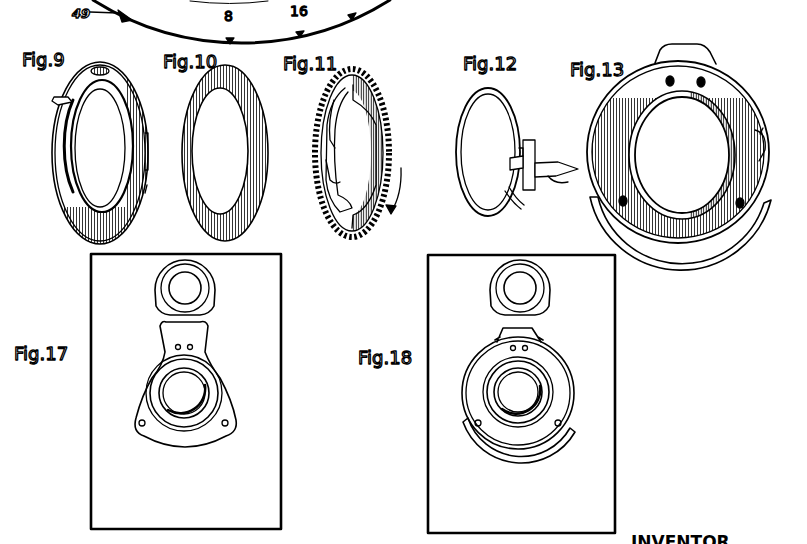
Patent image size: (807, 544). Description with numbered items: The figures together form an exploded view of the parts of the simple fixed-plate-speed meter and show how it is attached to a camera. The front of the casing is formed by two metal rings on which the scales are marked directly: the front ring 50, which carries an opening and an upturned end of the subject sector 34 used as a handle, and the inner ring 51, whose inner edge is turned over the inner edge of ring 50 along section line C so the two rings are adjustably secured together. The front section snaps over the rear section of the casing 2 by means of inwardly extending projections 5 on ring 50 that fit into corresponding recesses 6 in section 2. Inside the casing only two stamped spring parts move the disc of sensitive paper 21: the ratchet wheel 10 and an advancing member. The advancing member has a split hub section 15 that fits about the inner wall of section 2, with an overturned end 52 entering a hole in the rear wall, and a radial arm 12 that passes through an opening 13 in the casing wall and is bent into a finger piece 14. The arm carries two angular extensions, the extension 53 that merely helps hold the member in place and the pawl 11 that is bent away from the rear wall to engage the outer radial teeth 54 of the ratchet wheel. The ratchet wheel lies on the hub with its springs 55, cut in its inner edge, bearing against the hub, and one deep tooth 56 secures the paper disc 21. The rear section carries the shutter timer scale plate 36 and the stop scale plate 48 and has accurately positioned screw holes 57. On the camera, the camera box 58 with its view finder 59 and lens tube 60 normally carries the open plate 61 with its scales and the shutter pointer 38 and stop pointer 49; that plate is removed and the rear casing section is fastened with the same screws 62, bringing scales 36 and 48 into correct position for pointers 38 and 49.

In FIG. 13, the rear section of the casing 2 is at (729, 94).
In FIG. 18, the rear section of the casing 2 is at (572, 386).
In FIG. 9, the inwardly extending projections 5 is at (140, 100).
In FIG. 13, the recesses 6 is at (751, 108).
In FIG. 11, the ratchet wheel 10 is at (319, 101).
In FIG. 12, the pawl 11 is at (523, 207).
In FIG. 12, the radial arm 12 is at (514, 164).
In FIG. 13, the opening 13 is at (762, 132).
In FIG. 12, the finger piece 14 is at (559, 169).
In FIG. 12, the split hub section 15 is at (466, 130).
In FIG. 10, the disc of sensitive paper 21 is at (197, 162).
In FIG. 9, the upturned end of the subject sector 34 is at (56, 100).
In FIG. 13, the shutter timer scale plate 36 is at (691, 53).
In FIG. 18, the shutter timer scale plate 36 is at (529, 339).
In FIG. 17, the shutter pointer 38 is at (180, 322).
In FIG. 18, the shutter pointer 38 is at (510, 327).
In FIG. 13, the stop scale plate 48 is at (750, 228).
In FIG. 18, the stop scale plate 48 is at (565, 433).
In FIG. 17, the stop pointer 49 is at (193, 450).
In FIG. 18, the stop pointer 49 is at (533, 462).
In FIG. 9, the front ring 50 is at (118, 82).
In FIG. 9, the inner ring 51 is at (112, 93).
In FIG. 12, the overturned end 52 is at (523, 137).
In FIG. 13, the overturned end 52 is at (735, 128).
In FIG. 12, the angular extension 53 is at (533, 140).
In FIG. 11, the outer radial teeth 54 is at (391, 128).
In FIG. 11, the springs 55 is at (334, 172).
In FIG. 11, the deep tooth 56 is at (379, 98).
In FIG. 13, the screw holes 57 is at (705, 80).
In FIG. 17, the camera box 58 is at (271, 299).
In FIG. 17, the view finder 59 is at (213, 281).
In FIG. 17, the lens tube 60 is at (184, 393).
In FIG. 18, the lens tube 60 is at (518, 392).
In FIG. 17, the open plate 61 is at (146, 384).
In FIG. 17, the screws 62 is at (193, 347).
In FIG. 18, the screws 62 is at (535, 351).
In FIG. 9, the section line C— C is at (46, 214).